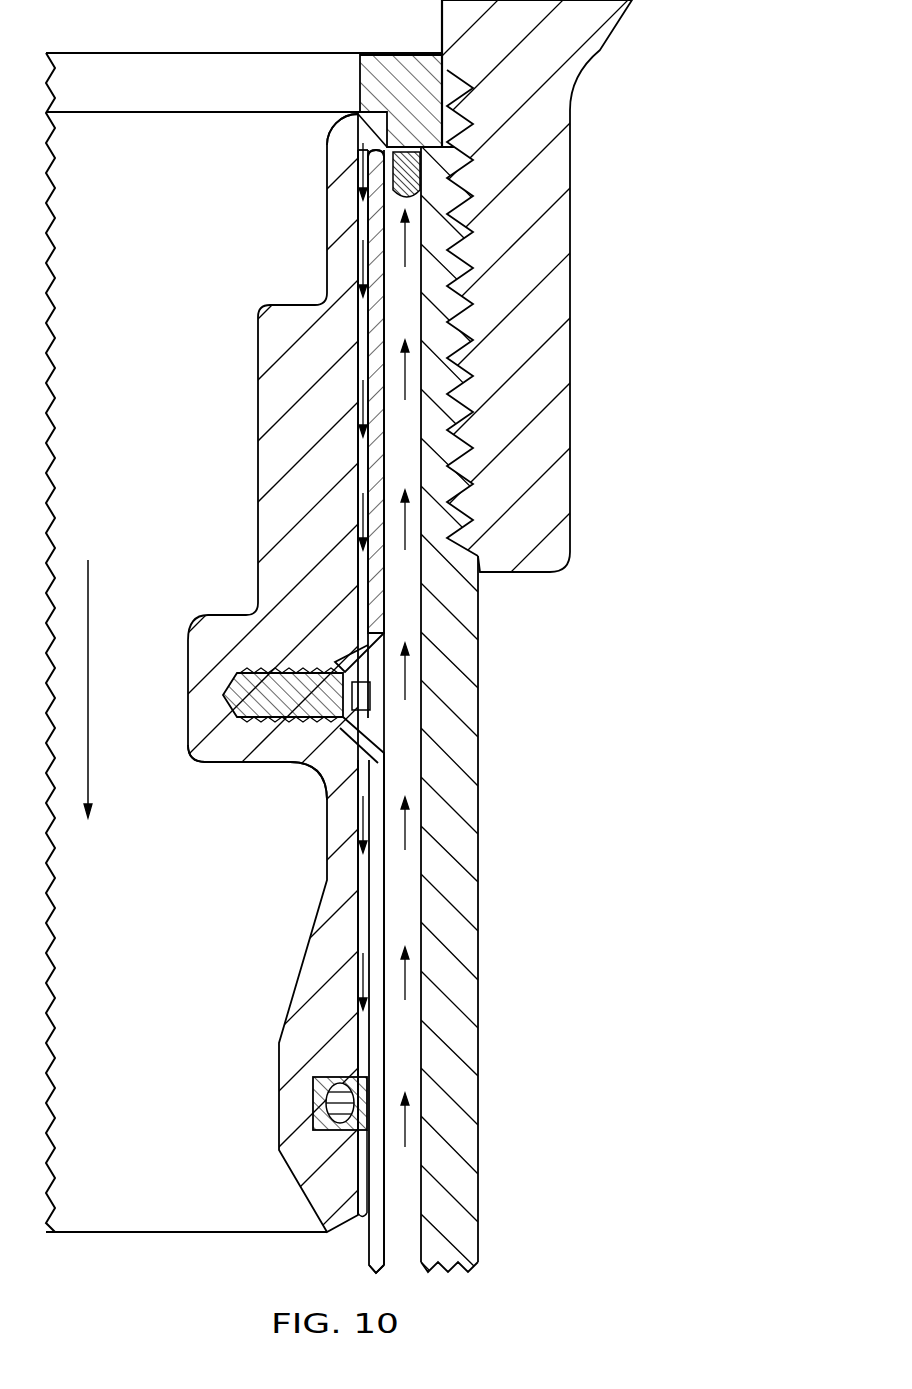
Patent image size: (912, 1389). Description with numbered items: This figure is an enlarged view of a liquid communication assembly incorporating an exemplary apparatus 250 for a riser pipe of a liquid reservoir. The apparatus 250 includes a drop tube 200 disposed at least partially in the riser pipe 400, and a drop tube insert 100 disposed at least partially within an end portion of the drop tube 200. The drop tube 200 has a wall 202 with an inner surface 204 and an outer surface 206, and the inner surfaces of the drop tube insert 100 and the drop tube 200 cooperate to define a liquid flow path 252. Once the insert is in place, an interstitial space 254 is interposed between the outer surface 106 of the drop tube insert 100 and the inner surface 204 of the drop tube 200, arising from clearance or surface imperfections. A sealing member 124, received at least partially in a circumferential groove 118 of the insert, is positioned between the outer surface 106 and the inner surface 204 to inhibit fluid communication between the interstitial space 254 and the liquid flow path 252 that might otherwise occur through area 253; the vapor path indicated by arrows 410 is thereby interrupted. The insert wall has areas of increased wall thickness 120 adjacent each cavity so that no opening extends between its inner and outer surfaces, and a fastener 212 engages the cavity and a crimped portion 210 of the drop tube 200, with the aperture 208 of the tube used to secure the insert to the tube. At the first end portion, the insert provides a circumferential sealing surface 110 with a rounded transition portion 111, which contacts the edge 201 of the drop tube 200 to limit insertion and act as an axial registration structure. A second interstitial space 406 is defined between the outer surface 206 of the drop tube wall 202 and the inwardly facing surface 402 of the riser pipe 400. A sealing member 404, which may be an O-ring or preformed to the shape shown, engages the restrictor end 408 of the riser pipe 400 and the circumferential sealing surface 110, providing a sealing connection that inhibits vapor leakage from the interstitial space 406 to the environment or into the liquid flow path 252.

The drop tube insert 100 is at (249, 728).
The outer surface 106 is at (376, 365).
The circumferential sealing surface 110 is at (423, 147).
The transition portion 111 is at (362, 114).
The circumferential groove 118 is at (318, 1118).
The area of increased wall thickness 120 is at (188, 693).
The sealing member 124 is at (316, 1104).
The drop tube 200 is at (420, 1232).
The edge 201 is at (367, 144).
The wall 202 is at (387, 880).
The inner surface 204 is at (360, 333).
The outer surface 206 is at (395, 1180).
The aperture 208 is at (282, 775).
The crimped portion 210 is at (380, 745).
The fastener 212 is at (373, 717).
The apparatus 250 is at (281, 728).
The liquid flow path 252 is at (88, 602).
The area 253 is at (362, 1228).
The interstitial space 254 is at (362, 918).
The riser pipe 400 is at (480, 940).
The inwardly facing surface 402 is at (420, 1030).
The sealing member 404 is at (440, 190).
The interstitial space 406 is at (410, 612).
The restrictor end 408 is at (420, 157).
The arrows 410 is at (362, 977).